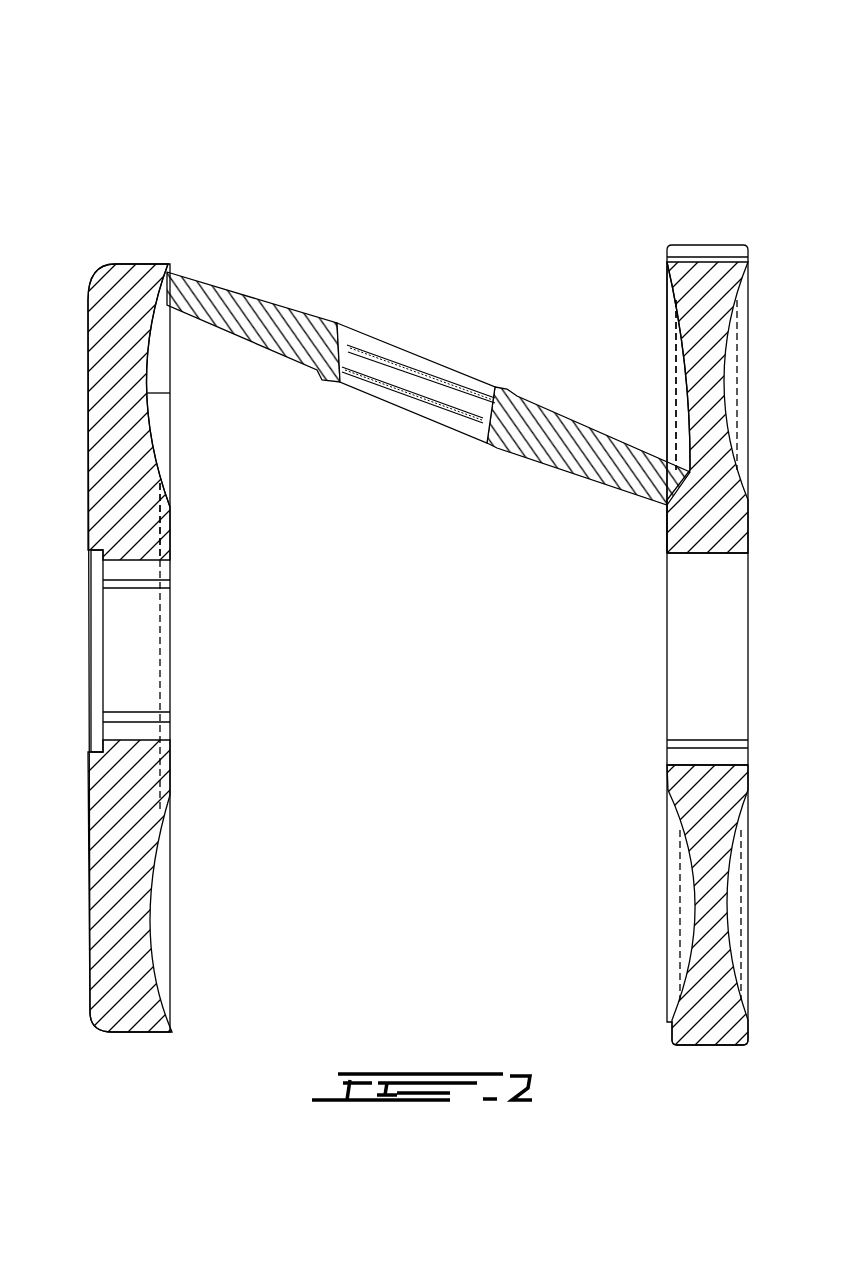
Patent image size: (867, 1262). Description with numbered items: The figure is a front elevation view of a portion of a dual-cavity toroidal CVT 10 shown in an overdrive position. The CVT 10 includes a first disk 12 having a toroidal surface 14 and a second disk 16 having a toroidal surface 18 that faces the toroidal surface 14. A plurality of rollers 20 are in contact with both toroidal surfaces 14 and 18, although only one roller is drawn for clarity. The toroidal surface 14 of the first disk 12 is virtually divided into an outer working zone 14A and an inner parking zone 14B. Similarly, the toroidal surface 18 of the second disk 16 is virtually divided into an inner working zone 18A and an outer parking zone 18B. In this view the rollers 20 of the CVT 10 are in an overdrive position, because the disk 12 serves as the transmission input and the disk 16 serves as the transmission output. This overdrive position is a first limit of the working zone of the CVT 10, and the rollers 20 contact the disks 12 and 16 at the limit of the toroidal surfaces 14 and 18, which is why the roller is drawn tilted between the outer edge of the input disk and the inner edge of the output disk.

The dual-cavity toroidal CVT 10 is at (442, 154).
The first disk 12 is at (133, 285).
The toroidal surface 14 is at (170, 363).
The outer working zone 14A is at (147, 393).
The inner parking zone 14B is at (176, 478).
The second disk 16 is at (700, 250).
The toroidal surface 18 is at (664, 313).
The inner working zone 18A is at (692, 387).
The outer parking zone 18B is at (667, 344).
The rollers 20 is at (290, 335).